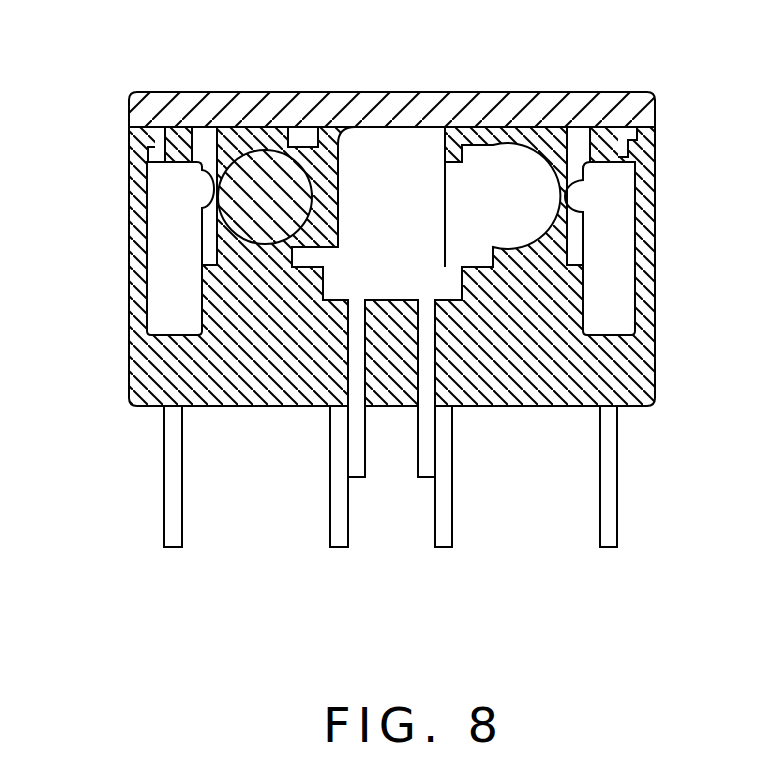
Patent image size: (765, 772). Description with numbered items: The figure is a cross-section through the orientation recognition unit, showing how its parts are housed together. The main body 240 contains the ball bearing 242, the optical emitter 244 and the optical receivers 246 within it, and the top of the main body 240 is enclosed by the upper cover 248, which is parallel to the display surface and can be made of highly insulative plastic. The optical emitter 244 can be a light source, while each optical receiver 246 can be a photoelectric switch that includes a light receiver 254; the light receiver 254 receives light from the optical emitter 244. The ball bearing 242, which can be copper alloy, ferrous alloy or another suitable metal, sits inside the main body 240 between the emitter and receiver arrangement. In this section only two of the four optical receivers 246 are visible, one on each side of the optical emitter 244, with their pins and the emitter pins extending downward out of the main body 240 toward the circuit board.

The main body 240 is at (153, 370).
The ball bearing 242 is at (253, 182).
The optical emitter 244 is at (377, 228).
The optical receiver 246 is at (163, 240).
The upper cover 248 is at (413, 112).
The light receiver 254 is at (575, 191).